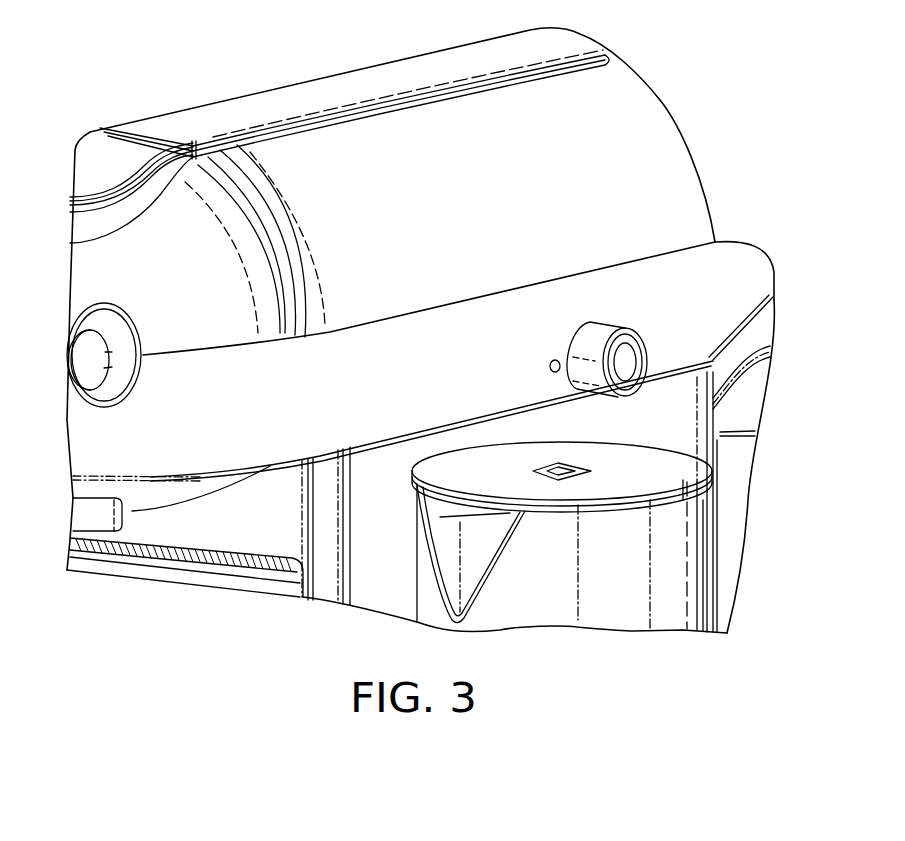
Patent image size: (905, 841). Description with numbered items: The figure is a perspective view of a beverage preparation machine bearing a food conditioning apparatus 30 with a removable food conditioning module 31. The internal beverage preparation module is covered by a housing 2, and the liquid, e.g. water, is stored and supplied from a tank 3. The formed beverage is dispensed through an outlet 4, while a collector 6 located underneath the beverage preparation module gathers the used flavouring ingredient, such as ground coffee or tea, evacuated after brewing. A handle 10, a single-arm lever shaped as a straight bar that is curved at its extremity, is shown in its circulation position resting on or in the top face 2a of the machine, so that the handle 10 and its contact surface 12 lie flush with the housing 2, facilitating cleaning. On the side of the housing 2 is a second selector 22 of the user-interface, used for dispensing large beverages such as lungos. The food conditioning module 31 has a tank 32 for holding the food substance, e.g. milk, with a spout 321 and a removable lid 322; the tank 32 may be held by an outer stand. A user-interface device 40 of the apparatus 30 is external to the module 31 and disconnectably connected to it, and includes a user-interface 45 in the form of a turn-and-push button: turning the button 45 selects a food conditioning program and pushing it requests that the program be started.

The housing 2 is at (406, 390).
The top face 2a is at (694, 175).
The tank 3 is at (740, 488).
The outlet 4 is at (88, 518).
The collector 6 is at (213, 553).
The handle 10 is at (225, 105).
The contact surface 12 is at (108, 139).
The second selector 22 is at (138, 335).
The food conditioning apparatus 30 is at (680, 595).
The food conditioning module 31 is at (705, 567).
The tank 32 is at (626, 562).
The user-interface device 40 is at (608, 344).
The user-interface 45 is at (577, 347).
The spout 321 is at (480, 560).
The removable lid 322 is at (652, 485).